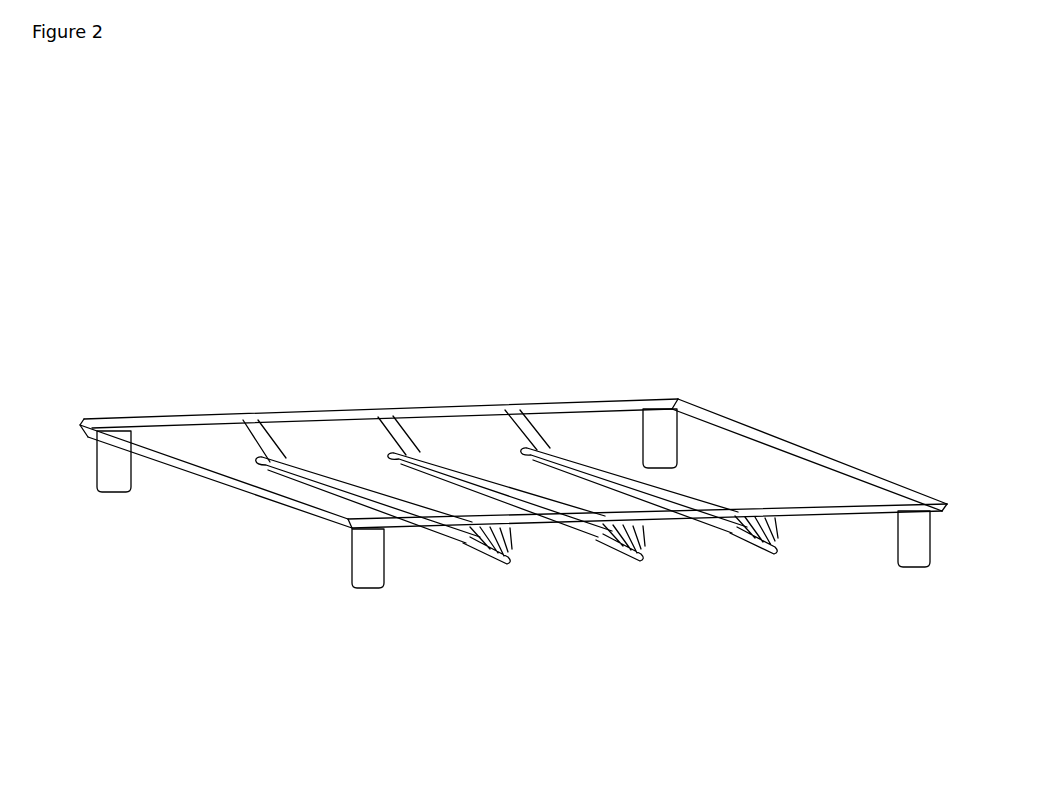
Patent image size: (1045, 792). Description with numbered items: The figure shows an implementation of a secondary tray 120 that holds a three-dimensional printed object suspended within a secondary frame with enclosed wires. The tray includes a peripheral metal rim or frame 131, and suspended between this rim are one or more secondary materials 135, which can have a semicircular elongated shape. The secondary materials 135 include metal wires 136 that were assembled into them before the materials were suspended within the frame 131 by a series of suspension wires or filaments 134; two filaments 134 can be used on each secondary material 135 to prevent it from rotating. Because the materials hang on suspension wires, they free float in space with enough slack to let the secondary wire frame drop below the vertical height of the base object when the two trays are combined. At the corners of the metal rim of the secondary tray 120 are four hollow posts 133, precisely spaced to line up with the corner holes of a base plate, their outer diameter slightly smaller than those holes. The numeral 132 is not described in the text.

The secondary tray 120 is at (291, 163).
The peripheral metal rim or frame 131 is at (230, 476).
The second side rail 132 is at (662, 400).
The hollow posts 133 is at (372, 558).
The suspension wires/filaments 134 is at (402, 427).
The secondary materials 135 is at (571, 456).
The metal wires 136 is at (762, 553).